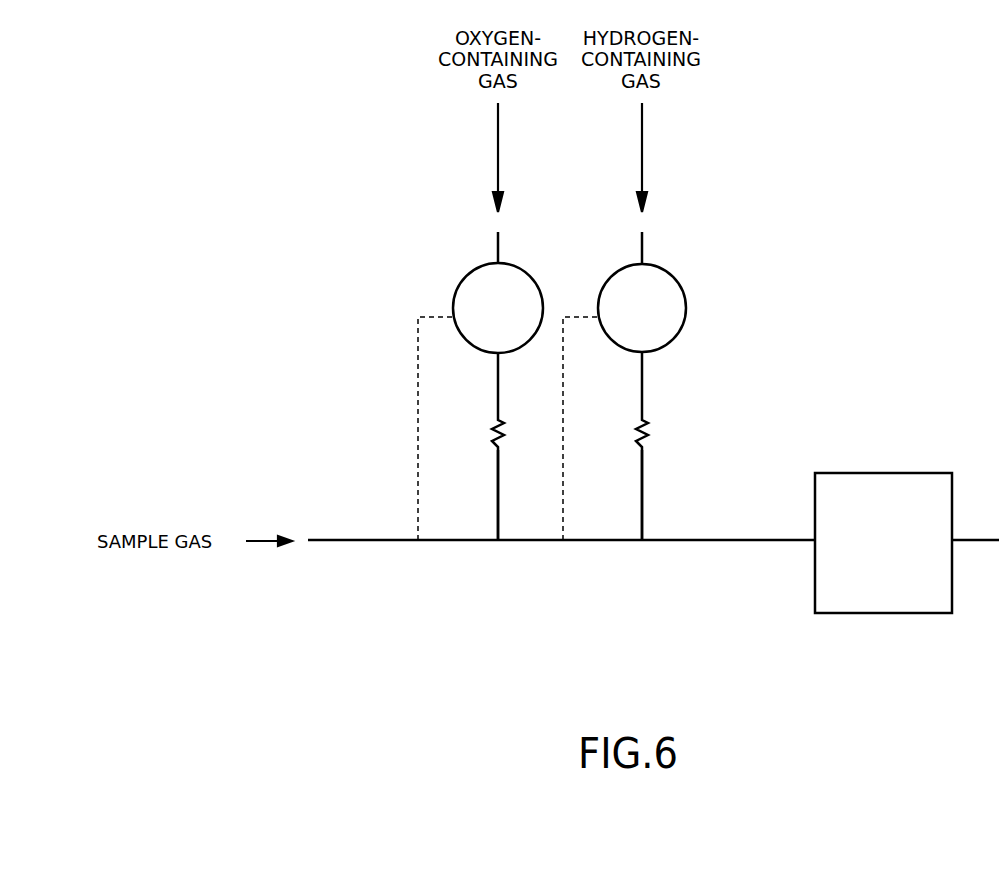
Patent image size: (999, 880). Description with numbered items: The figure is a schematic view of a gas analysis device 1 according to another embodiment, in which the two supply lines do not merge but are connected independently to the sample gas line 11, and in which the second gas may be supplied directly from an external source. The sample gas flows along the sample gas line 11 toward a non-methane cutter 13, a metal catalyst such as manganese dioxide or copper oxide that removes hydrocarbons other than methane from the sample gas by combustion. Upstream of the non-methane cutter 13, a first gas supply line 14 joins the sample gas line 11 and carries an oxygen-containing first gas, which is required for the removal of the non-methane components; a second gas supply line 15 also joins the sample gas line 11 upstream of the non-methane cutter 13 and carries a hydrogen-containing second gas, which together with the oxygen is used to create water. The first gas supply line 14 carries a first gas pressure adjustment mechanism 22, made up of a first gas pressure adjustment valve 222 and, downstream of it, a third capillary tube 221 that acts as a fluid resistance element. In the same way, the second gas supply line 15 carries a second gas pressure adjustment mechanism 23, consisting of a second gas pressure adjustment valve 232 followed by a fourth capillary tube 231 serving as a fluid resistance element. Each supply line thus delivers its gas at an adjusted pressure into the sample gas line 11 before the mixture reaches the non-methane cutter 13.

The gas analysis device 1 is at (809, 223).
The sample gas line 11 is at (365, 540).
The non-methane cutter 13 is at (882, 613).
The first gas supply line 14 is at (498, 497).
The second gas supply line 15 is at (643, 497).
The first gas pressure adjustment mechanism 22 is at (470, 318).
The third capillary tube 221 is at (495, 421).
The first gas pressure adjustment valve 222 is at (523, 270).
The second gas pressure adjustment mechanism 23 is at (665, 320).
The fourth capillary tube 231 is at (645, 422).
The second gas pressure adjustment valve 232 is at (683, 276).